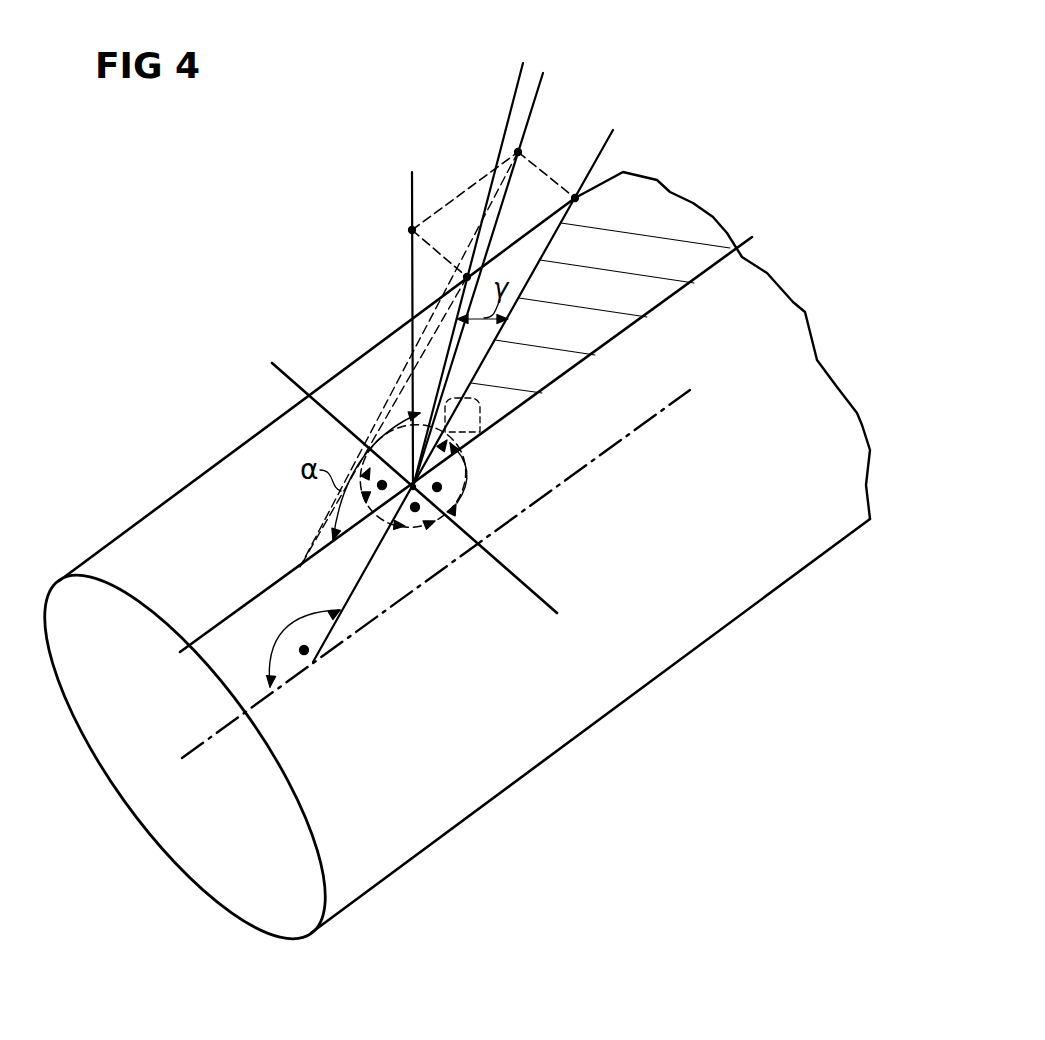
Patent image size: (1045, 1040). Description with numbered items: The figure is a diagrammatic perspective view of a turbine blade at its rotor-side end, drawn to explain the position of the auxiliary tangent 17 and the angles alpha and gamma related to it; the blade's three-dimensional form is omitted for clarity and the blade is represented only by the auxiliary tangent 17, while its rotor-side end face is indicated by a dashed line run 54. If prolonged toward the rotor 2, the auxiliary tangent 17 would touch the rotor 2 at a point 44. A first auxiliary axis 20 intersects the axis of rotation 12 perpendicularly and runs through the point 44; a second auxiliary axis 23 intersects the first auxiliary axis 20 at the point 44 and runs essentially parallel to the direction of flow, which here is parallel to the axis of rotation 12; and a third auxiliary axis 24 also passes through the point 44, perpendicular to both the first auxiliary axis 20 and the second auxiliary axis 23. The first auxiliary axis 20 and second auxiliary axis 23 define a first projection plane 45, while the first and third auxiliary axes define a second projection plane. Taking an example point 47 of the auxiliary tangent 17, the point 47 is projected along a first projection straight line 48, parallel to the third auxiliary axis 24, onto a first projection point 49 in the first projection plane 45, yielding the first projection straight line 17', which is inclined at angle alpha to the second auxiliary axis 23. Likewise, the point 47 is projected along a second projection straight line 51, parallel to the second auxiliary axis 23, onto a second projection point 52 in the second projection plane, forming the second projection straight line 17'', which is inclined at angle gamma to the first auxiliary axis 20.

The rotor 2 is at (115, 753).
The axis of rotation 12 is at (200, 748).
The auxiliary tangent 17 is at (380, 314).
The first projection straight line 17' is at (468, 267).
The second projection straight line 17'' is at (526, 272).
The first auxiliary axis 20 is at (610, 144).
The second auxiliary axis 23 is at (693, 278).
The third auxiliary axis 24 is at (522, 583).
The point 44 is at (410, 490).
The first projection plane 45 is at (675, 240).
The point of the auxiliary tangent 47 is at (411, 230).
The first projection straight line 48 is at (436, 252).
The first projection point 49 is at (462, 276).
The second projection straight line 51 is at (457, 196).
The second projection point 52 is at (522, 152).
The dashed line run 54 is at (472, 457).